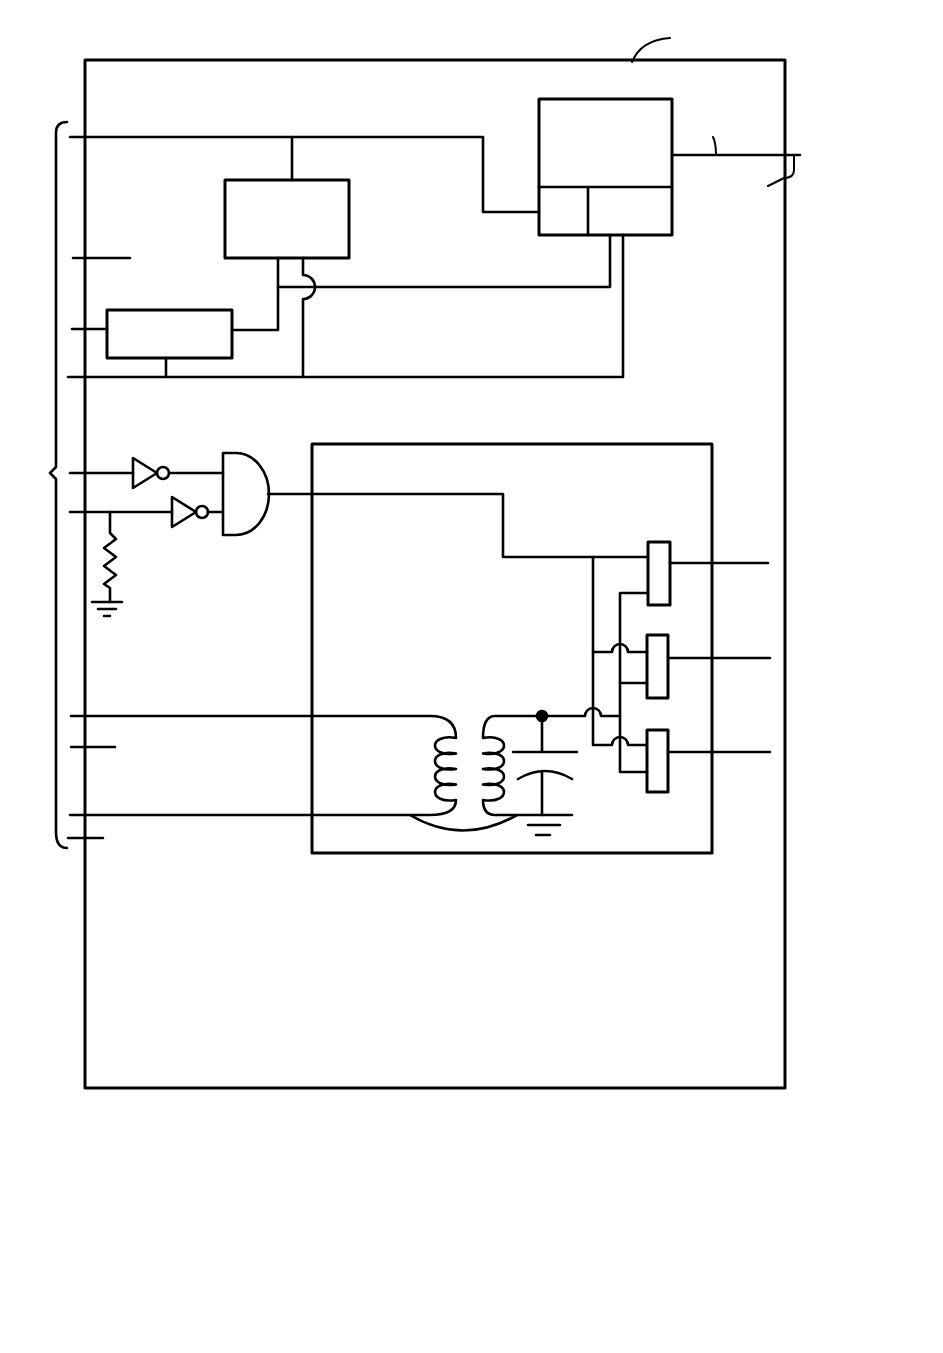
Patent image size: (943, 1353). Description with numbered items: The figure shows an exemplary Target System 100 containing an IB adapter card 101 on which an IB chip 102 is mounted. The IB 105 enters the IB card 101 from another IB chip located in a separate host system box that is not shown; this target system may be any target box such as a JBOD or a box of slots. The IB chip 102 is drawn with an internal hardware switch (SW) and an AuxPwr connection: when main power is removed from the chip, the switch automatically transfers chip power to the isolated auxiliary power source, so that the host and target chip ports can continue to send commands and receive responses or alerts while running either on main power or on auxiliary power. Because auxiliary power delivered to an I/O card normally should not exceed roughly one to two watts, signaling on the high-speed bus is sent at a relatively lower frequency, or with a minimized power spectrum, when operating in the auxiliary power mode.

The Target System 100 is at (157, 40).
The IB adapter card 101 is at (487, 1088).
The IB chip 102 is at (539, 120).
The IB 105 is at (736, 178).